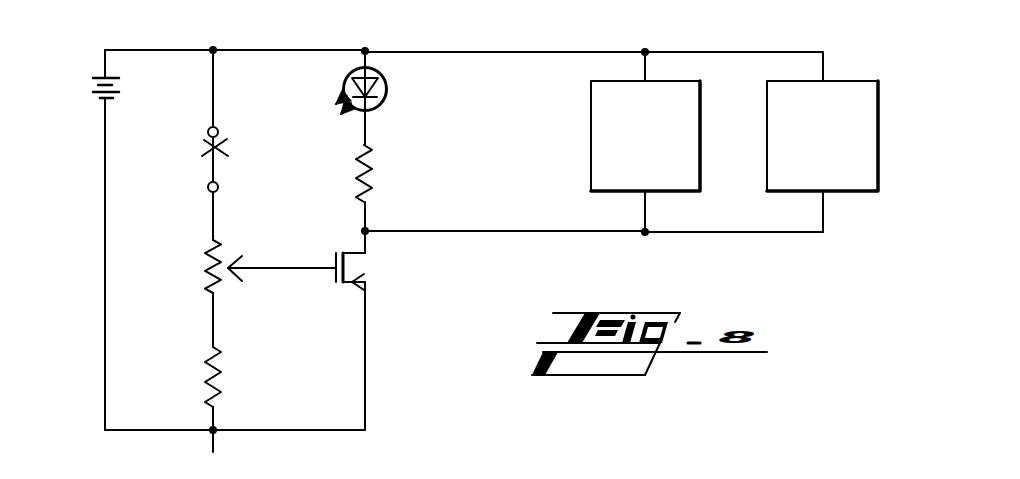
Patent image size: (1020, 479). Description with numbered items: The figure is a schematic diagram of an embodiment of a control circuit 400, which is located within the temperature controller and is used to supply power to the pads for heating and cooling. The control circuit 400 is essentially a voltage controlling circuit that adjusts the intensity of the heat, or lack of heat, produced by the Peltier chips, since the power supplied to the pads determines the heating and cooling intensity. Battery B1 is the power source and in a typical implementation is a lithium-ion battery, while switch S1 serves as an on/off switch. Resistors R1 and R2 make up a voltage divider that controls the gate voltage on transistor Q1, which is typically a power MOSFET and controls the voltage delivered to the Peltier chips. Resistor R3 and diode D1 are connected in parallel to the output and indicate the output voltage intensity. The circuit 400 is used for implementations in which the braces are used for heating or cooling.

The control circuit 400 is at (76, 175).
The battery B1 is at (89, 240).
The switch S1 is at (228, 159).
The resistor R1 is at (230, 377).
The resistor R2 is at (270, 248).
The resistor R3 is at (383, 173).
The transistor Q1 is at (335, 260).
The diode D1 is at (373, 87).